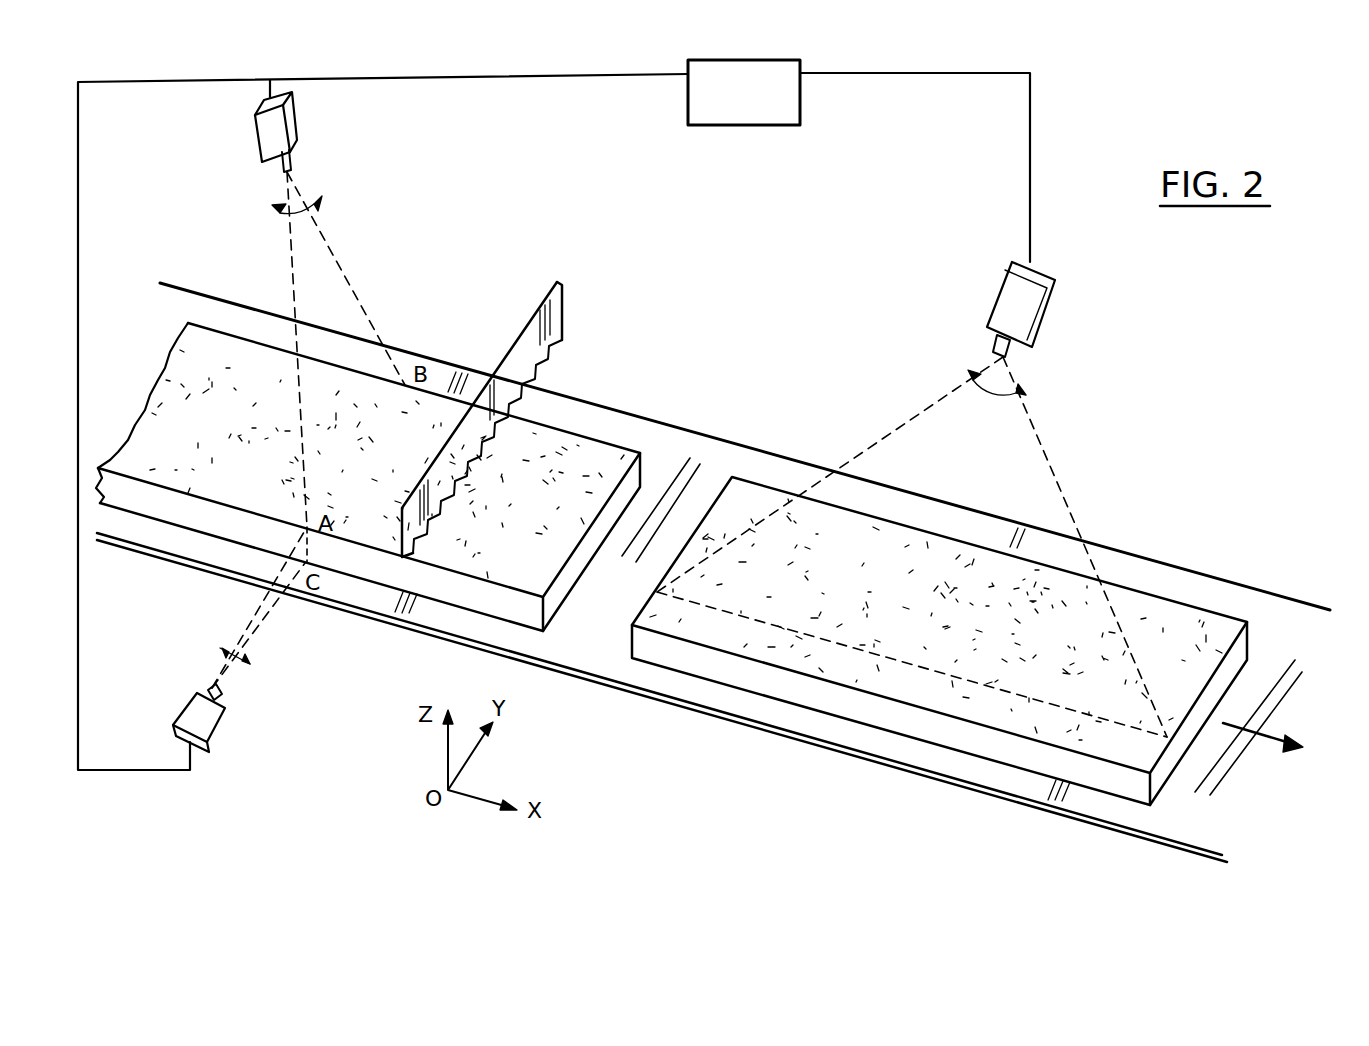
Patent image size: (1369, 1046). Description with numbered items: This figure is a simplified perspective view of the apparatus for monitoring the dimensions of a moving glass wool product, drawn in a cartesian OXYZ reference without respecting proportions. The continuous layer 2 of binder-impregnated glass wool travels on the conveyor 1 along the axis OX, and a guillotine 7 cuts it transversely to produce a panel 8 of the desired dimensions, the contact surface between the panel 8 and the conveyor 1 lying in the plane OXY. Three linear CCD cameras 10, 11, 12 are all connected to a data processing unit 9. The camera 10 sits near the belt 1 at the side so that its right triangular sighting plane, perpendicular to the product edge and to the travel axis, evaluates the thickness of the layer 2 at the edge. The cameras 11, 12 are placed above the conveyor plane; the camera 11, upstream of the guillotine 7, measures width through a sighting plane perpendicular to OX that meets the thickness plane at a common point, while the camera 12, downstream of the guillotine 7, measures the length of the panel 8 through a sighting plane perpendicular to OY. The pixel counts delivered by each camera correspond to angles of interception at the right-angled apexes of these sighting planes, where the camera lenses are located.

The conveyor 1 is at (182, 555).
The continuous layer 2 is at (240, 358).
The guillotine 7 is at (523, 348).
The panel 8 is at (748, 490).
The data processing unit 9 is at (736, 125).
The camera 10 is at (222, 722).
The camera 11 is at (257, 135).
The camera 12 is at (1042, 318).